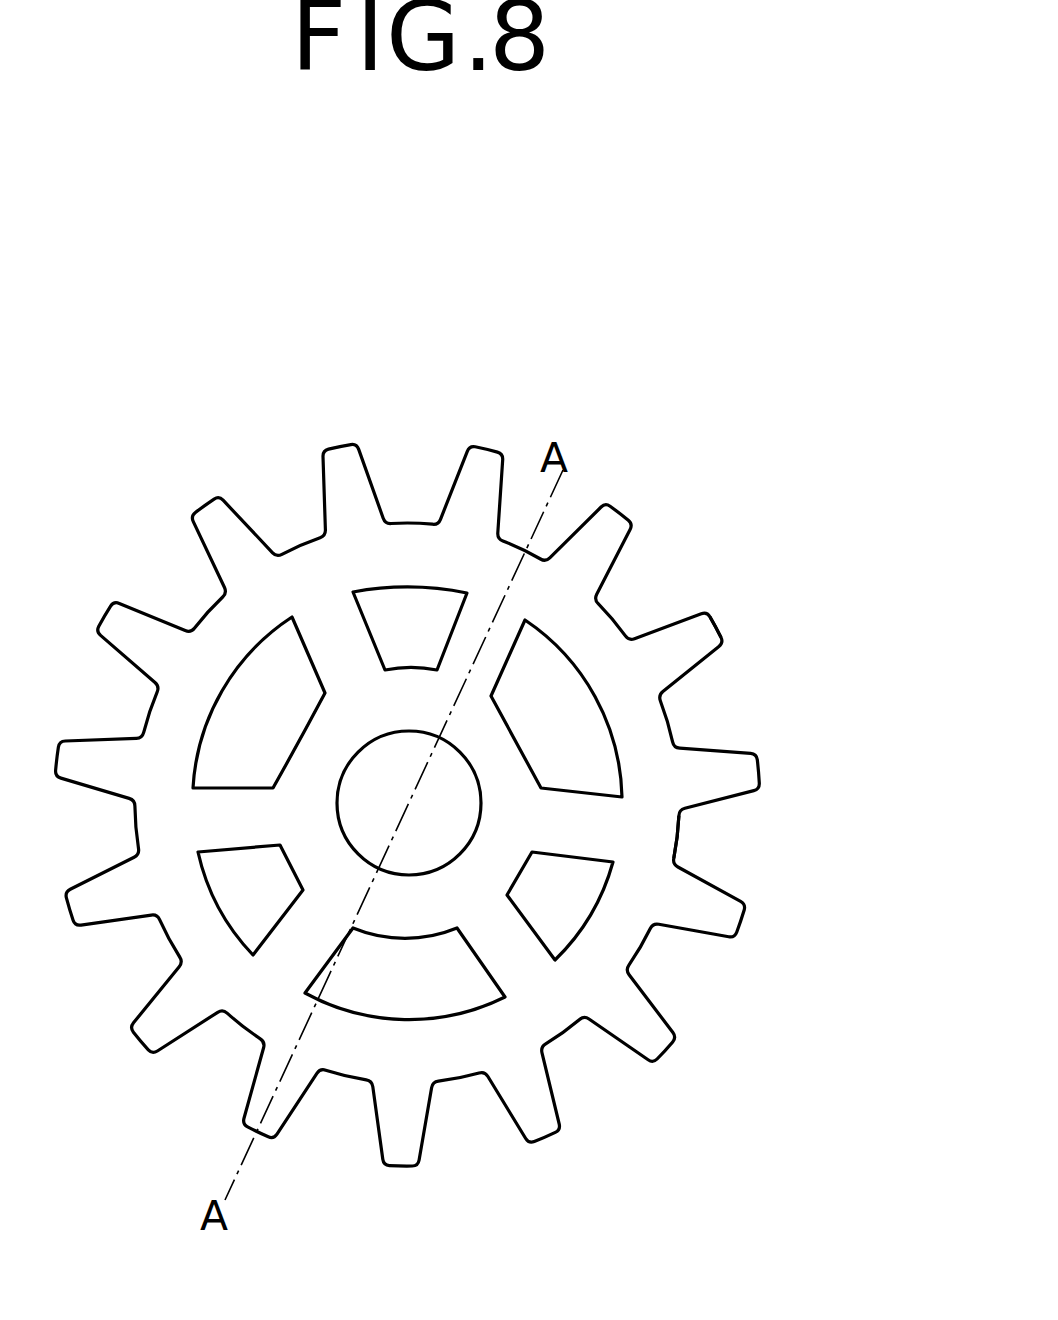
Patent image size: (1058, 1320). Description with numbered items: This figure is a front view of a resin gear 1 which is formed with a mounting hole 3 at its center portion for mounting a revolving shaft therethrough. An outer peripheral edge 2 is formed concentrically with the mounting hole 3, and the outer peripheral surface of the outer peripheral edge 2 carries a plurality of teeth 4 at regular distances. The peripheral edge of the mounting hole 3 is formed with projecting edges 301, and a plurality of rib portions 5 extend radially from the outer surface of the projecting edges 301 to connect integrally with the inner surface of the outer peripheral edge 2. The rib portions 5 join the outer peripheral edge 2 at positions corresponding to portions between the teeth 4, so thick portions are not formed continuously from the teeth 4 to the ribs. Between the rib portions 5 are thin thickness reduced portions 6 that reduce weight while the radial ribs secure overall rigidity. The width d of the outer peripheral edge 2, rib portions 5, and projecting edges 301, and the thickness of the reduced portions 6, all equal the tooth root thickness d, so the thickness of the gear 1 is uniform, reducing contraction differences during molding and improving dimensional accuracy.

The gear 1 is at (827, 647).
The outer peripheral edge 2 is at (673, 835).
The mounting hole 3 is at (428, 853).
The teeth 4 is at (714, 621).
The rib portions 5 is at (467, 636).
The thickness reduced portions 6 is at (397, 597).
The projecting edges 301 is at (307, 750).
The tooth thickness d is at (692, 715).